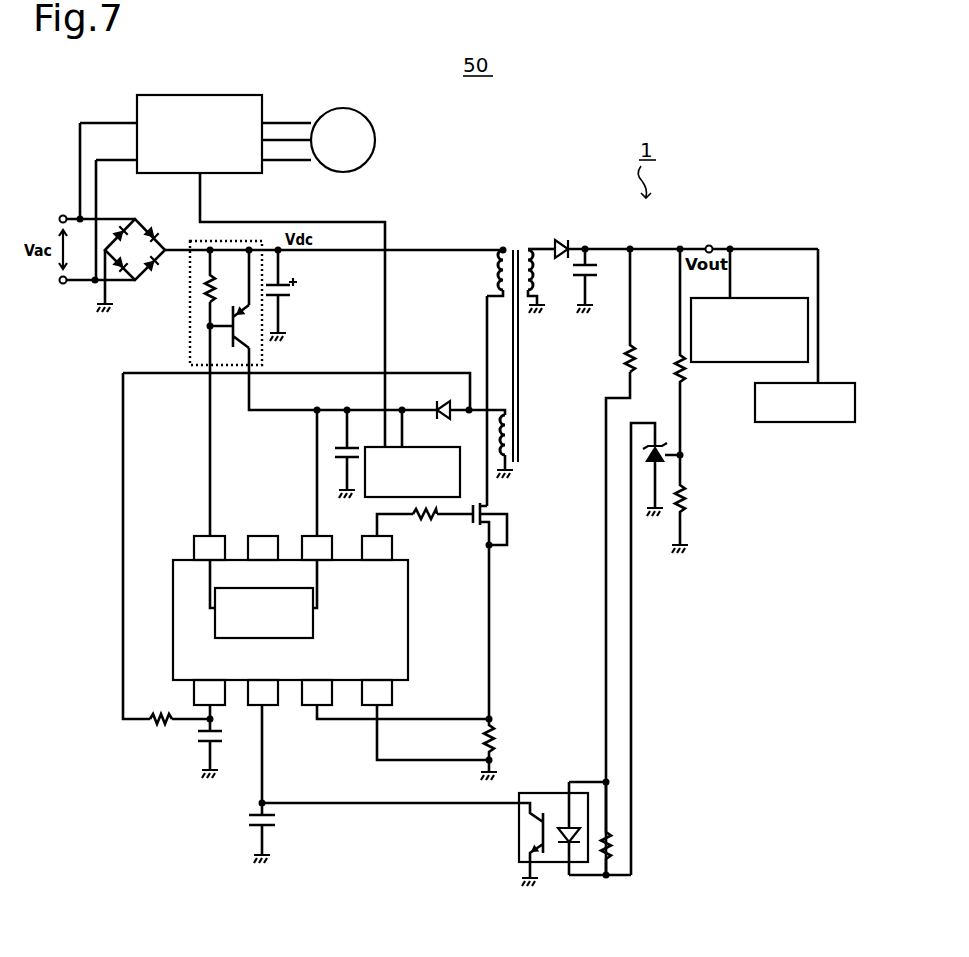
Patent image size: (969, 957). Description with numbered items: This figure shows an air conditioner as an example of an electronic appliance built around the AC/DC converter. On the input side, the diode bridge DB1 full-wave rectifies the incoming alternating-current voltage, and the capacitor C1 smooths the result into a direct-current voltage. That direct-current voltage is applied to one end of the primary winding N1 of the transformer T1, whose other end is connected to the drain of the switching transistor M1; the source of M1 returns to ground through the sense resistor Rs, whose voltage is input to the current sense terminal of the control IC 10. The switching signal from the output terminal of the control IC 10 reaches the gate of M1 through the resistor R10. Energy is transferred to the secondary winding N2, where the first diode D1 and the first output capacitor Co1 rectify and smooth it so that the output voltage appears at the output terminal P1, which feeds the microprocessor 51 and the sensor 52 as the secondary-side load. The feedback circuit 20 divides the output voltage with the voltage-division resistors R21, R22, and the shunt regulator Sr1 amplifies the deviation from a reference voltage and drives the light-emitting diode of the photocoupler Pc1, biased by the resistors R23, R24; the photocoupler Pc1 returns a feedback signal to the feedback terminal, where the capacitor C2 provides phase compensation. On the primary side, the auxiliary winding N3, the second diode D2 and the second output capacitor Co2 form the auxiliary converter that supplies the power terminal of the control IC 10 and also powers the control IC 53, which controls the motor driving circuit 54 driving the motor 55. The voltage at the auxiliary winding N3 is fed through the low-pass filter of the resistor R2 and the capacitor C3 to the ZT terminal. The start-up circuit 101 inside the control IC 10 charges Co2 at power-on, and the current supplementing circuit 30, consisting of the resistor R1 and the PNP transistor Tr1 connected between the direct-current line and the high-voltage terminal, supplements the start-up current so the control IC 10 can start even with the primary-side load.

The control IC (control circuit) 10 is at (316, 620).
The start-up circuit 101 is at (314, 633).
The feedback circuit 20 is at (611, 844).
The current supplementing circuit 30 is at (190, 328).
The microprocessor 51 is at (762, 298).
The sensor 52 is at (836, 383).
The control IC 53 is at (464, 458).
The motor driving circuit 54 is at (254, 95).
The motor 55 is at (348, 108).
The diode bridge DB1 is at (170, 221).
The resistor R1 is at (205, 289).
The PNP transistor Tr1 is at (256, 338).
The capacitor C1 is at (290, 288).
The transformer T1 is at (517, 336).
The primary winding N1 is at (503, 248).
The secondary winding N2 is at (528, 248).
The auxiliary winding N3 is at (509, 460).
The first diode D1 is at (562, 240).
The first output capacitor Co1 is at (601, 265).
The output terminal P1 is at (710, 245).
The voltage-division resistor R21 is at (688, 368).
The voltage-division resistor R22 is at (688, 498).
The resistor R23 is at (621, 367).
The resistor R24 is at (644, 828).
The shunt regulator Sr1 is at (668, 441).
The second diode D2 is at (436, 403).
The second output capacitor Co2 is at (334, 451).
The switching transistor M1 is at (497, 510).
The resistor R10 is at (427, 518).
The resistor R2 is at (156, 715).
The capacitor C2 is at (248, 822).
The capacitor C3 is at (198, 737).
The sense resistor Rs is at (499, 740).
The photocoupler Pc1 is at (523, 793).